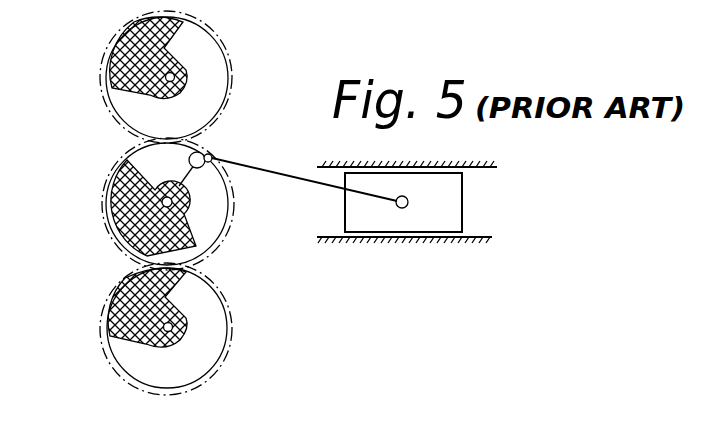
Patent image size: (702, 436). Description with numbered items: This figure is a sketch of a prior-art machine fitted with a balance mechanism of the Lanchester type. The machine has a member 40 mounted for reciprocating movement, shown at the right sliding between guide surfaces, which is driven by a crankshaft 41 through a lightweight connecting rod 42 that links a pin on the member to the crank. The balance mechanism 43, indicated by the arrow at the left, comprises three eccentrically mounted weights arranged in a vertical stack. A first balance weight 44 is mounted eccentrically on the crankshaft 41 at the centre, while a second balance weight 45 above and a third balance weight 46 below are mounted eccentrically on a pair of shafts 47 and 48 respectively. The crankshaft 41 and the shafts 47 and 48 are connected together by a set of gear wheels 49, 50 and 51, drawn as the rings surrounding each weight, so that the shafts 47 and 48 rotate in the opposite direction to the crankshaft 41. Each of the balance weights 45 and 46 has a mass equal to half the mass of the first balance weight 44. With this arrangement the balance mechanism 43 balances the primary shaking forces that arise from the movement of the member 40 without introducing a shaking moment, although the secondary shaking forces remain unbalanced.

The member 40 is at (428, 218).
The crankshaft 41 is at (202, 152).
The connecting rod 42 is at (283, 173).
The balance mechanism 43 is at (98, 242).
The first balance weight 44 is at (127, 186).
The second balance weight 45 is at (130, 46).
The third balance weight 46 is at (118, 313).
The shaft 47 is at (185, 70).
The shaft 48 is at (174, 330).
The gear wheel 49 is at (226, 232).
The gear wheel 50 is at (117, 107).
The gear wheel 51 is at (142, 386).